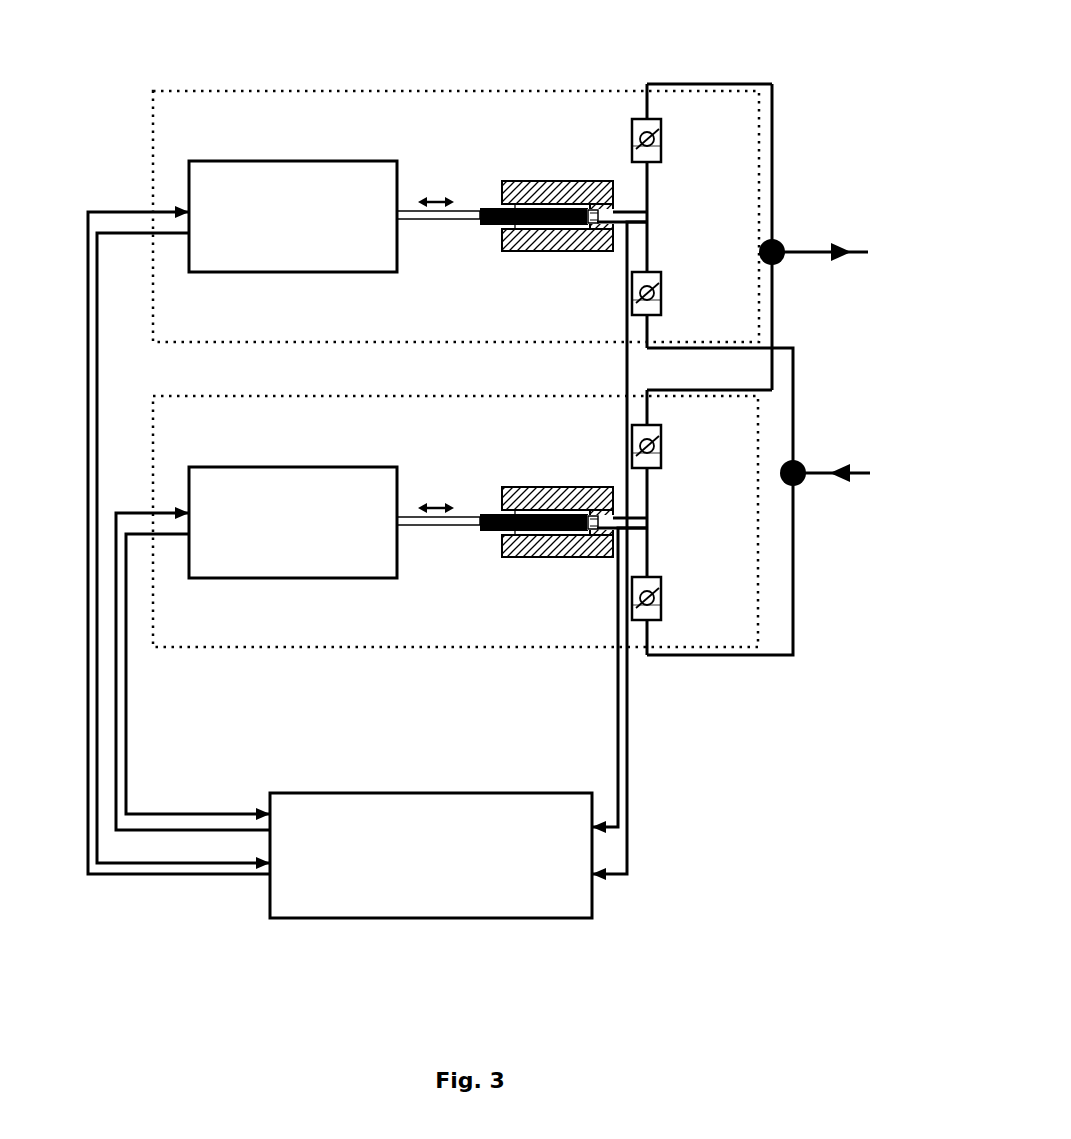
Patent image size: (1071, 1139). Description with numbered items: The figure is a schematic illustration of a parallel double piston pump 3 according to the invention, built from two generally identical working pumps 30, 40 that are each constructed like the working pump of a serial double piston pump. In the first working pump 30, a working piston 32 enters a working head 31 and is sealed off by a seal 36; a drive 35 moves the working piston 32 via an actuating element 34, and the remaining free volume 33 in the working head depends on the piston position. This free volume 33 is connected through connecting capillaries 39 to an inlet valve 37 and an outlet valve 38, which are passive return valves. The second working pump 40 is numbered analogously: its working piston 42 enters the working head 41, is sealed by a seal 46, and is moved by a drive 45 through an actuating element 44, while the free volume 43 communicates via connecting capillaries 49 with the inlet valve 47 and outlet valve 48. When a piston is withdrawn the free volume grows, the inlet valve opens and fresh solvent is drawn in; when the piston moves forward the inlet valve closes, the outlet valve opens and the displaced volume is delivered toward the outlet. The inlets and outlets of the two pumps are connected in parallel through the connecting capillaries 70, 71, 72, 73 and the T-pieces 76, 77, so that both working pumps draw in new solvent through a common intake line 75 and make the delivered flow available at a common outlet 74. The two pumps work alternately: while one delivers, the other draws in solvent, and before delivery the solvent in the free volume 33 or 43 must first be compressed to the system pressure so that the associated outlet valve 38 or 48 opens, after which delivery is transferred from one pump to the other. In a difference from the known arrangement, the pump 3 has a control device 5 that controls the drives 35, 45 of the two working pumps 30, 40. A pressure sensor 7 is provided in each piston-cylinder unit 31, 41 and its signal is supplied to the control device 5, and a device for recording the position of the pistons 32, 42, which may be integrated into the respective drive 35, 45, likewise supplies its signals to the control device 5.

The parallel double piston pump 3 is at (655, 68).
The control device 5 is at (458, 802).
The pressure sensor 7 is at (597, 181).
The first working pump 30 is at (258, 342).
The working head 31 is at (552, 252).
The working piston 32 is at (486, 228).
The free volume 33 is at (585, 230).
The actuating element 34 is at (428, 222).
The drive 35 is at (293, 216).
The seal 36 is at (500, 207).
The inlet valve 37 is at (663, 306).
The outlet valve 38 is at (663, 157).
The connecting capillaries 39 is at (648, 243).
The second working pump 40 is at (258, 647).
The working head 41 is at (552, 558).
The working piston 42 is at (486, 534).
The free volume 43 is at (585, 536).
The actuating element 44 is at (428, 528).
The drive 45 is at (293, 522).
The seal 46 is at (500, 513).
The inlet valve 47 is at (663, 616).
The outlet valve 48 is at (663, 463).
The connecting capillaries 49 is at (648, 549).
The connecting capillary 70 is at (795, 385).
The connecting capillary 71 is at (795, 603).
The connecting capillary 72 is at (774, 147).
The connecting capillary 73 is at (774, 299).
The common outlet 74 is at (863, 248).
The common intake line 75 is at (858, 482).
The T-piece 76 is at (785, 242).
The T-piece 77 is at (803, 462).